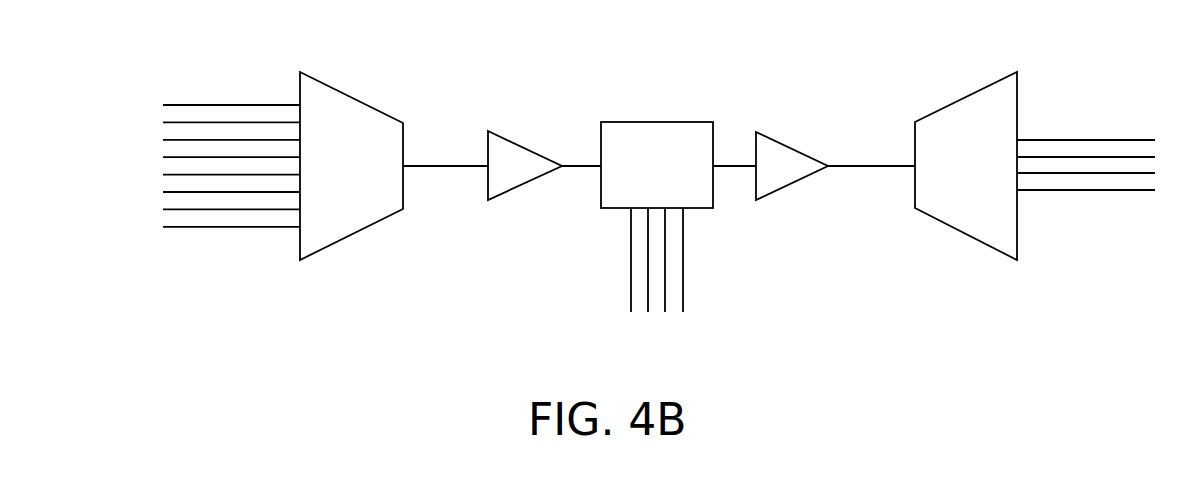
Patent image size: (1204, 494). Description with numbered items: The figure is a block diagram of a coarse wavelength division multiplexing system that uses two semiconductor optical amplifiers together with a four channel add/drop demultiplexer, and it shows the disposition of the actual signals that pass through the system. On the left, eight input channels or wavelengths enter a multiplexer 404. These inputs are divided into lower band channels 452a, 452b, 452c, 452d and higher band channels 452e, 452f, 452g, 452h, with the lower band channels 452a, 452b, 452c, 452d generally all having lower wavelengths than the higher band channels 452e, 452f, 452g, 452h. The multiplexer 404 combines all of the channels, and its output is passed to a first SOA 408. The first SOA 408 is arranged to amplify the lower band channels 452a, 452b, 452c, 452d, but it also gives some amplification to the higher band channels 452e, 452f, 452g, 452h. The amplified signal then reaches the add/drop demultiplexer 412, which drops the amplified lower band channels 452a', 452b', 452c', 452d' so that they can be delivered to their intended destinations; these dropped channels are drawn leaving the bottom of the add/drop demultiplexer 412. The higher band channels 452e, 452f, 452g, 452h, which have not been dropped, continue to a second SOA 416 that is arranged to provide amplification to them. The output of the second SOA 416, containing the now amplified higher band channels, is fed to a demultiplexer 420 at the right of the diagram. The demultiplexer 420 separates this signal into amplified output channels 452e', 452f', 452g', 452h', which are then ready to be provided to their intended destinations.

The multiplexer 404 is at (350, 97).
The first SOA 408 is at (507, 138).
The add/drop demultiplexer 412 is at (687, 122).
The second SOA 416 is at (780, 140).
The demultiplexer 420 is at (968, 236).
The lower band channel 452a is at (227, 277).
The lower band channel 452b is at (219, 241).
The lower band channel 452c is at (275, 266).
The lower band channel 452d is at (277, 241).
The higher band channel 452e is at (250, 96).
The higher band channel 452f is at (223, 78).
The higher band channel 452g is at (205, 79).
The higher band channel 452h is at (202, 83).
The amplified dropped channel 452a' is at (736, 260).
The amplified dropped channel 452b' is at (719, 260).
The amplified dropped channel 452c' is at (584, 260).
The amplified dropped channel 452d' is at (575, 260).
The amplified output channel 452e' is at (1087, 209).
The amplified output channel 452f' is at (1086, 214).
The amplified output channel 452g' is at (1087, 121).
The amplified output channel 452h' is at (1086, 117).